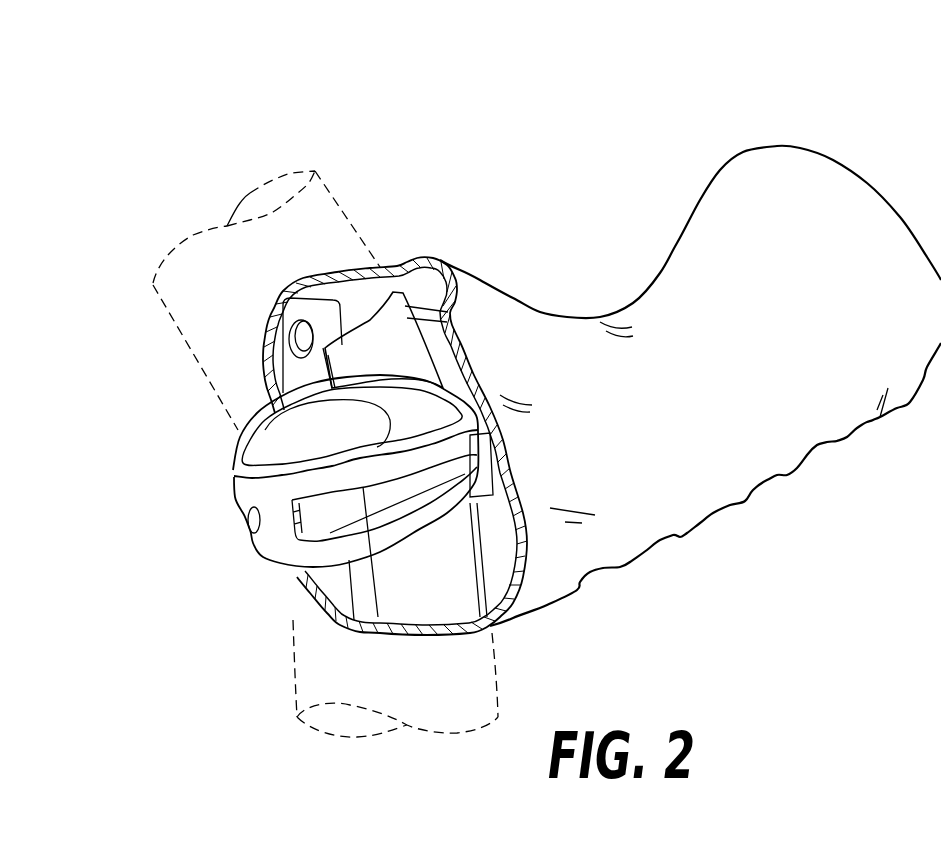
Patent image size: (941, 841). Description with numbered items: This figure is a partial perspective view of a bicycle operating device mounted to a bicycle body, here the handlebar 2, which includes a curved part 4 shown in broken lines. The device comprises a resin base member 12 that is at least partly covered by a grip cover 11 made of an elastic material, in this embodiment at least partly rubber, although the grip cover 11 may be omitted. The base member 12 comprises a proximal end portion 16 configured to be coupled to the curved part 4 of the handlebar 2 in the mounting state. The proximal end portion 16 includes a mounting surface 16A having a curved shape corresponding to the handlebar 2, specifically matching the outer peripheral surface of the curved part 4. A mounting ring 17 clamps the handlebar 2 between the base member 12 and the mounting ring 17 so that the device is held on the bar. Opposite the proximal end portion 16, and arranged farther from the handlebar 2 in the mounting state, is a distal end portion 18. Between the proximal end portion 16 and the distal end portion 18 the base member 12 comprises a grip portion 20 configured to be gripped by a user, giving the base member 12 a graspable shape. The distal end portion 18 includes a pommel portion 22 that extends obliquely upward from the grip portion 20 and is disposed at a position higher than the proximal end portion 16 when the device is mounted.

The handlebar 2 is at (150, 285).
The curved part 4 is at (213, 380).
The grip cover 11 is at (307, 580).
The base member 12 is at (340, 595).
The proximal end portion 16 is at (428, 333).
The mounting surface 16A is at (387, 343).
The mounting ring 17 is at (268, 499).
The distal end portion 18 is at (757, 203).
The grip portion 20 is at (660, 307).
The pommel portion 22 is at (828, 183).